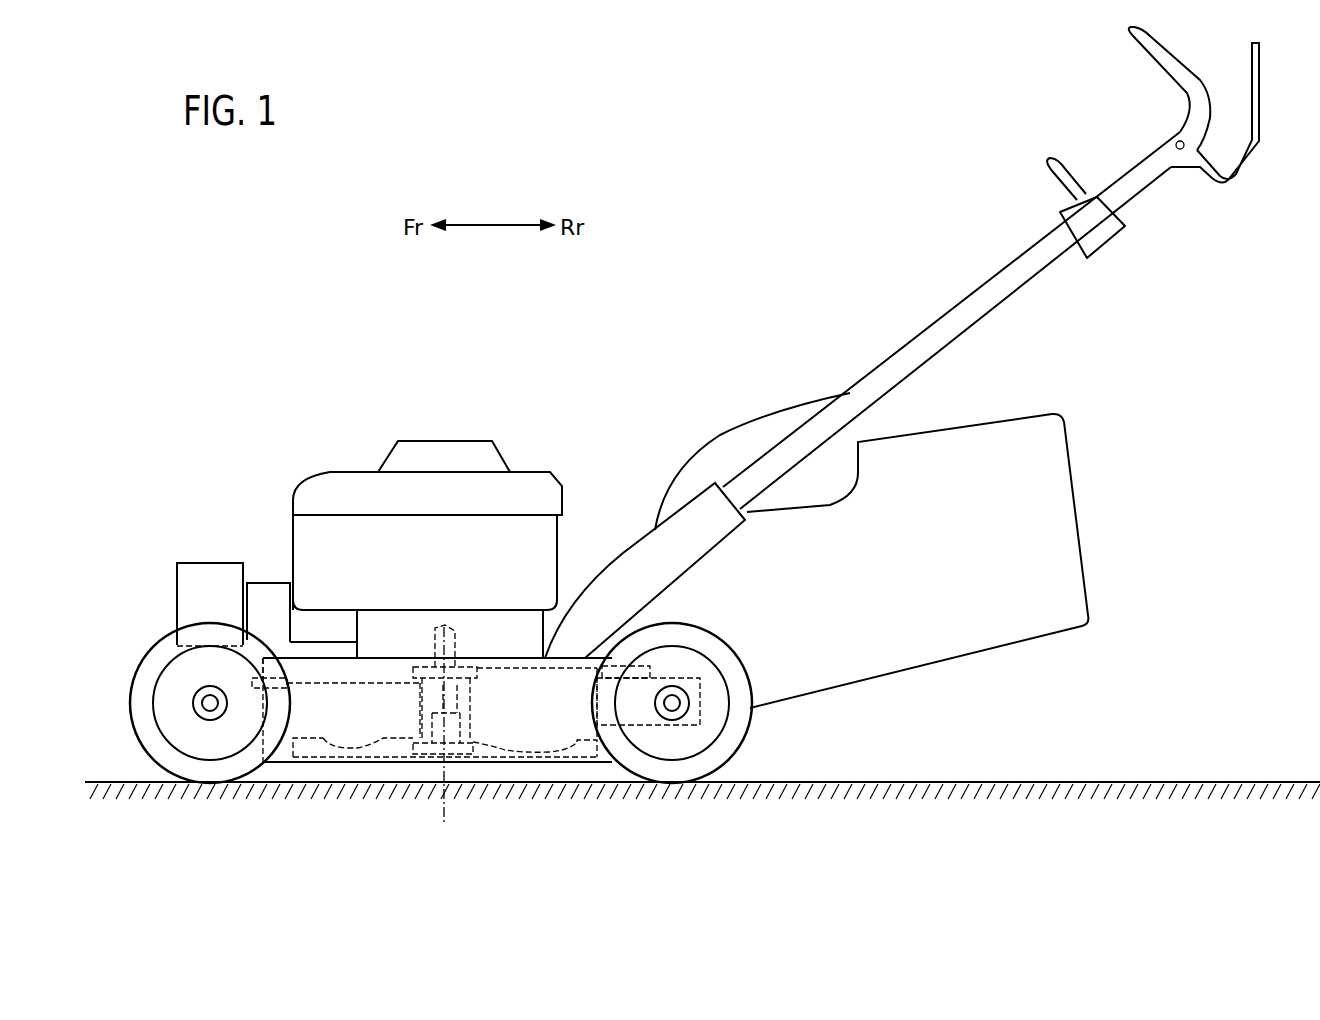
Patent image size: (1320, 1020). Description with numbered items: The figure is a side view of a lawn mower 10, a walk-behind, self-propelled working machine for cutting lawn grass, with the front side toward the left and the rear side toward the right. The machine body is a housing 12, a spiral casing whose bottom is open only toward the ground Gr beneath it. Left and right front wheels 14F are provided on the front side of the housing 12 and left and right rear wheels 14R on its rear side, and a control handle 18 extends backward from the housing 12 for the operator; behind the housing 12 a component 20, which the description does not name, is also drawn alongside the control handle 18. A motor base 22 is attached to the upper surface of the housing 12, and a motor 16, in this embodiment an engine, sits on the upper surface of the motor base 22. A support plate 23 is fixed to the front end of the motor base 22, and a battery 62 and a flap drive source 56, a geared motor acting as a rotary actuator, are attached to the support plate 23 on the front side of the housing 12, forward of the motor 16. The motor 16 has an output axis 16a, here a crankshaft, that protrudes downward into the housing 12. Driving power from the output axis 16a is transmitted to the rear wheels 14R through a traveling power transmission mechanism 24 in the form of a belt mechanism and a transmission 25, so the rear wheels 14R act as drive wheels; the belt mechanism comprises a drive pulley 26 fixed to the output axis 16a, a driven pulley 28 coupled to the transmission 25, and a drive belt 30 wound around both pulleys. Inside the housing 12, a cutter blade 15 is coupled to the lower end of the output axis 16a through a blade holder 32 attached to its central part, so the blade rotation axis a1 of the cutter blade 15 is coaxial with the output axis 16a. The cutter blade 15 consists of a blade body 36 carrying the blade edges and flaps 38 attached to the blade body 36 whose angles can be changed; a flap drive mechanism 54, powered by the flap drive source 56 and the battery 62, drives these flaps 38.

The lawn mower 10 is at (314, 345).
The housing 12 is at (339, 646).
The front wheels 14F is at (146, 673).
The rear wheels 14R is at (737, 724).
The cutter blade 15 is at (345, 747).
The motor 16 is at (422, 432).
The output axis 16a is at (453, 644).
The control handle 18 is at (968, 312).
The grass bag 20 is at (1058, 511).
The motor base 22 is at (370, 628).
The support plate 23 is at (306, 640).
The traveling power transmission mechanism 24 is at (557, 674).
The transmission 25 is at (690, 678).
The drive pulley 26 is at (418, 668).
The driven pulley 28 is at (622, 665).
The drive belt 30 is at (517, 667).
The blade holder 32 is at (462, 748).
The blade body 36 is at (383, 758).
The flaps 38 is at (306, 758).
The flap drive mechanism 54 is at (410, 695).
The flap drive source 56 is at (268, 583).
The battery 62 is at (192, 566).
The blade rotation axis a1 is at (448, 736).
The ground Gr is at (1215, 781).